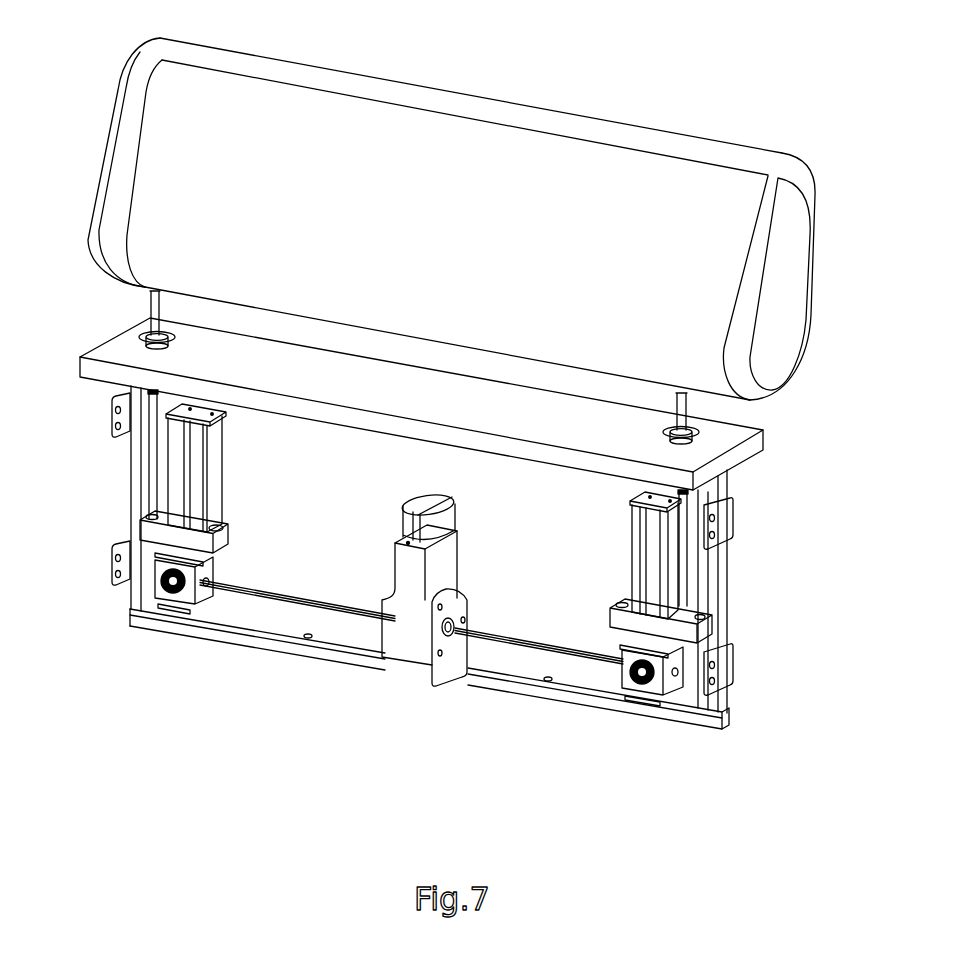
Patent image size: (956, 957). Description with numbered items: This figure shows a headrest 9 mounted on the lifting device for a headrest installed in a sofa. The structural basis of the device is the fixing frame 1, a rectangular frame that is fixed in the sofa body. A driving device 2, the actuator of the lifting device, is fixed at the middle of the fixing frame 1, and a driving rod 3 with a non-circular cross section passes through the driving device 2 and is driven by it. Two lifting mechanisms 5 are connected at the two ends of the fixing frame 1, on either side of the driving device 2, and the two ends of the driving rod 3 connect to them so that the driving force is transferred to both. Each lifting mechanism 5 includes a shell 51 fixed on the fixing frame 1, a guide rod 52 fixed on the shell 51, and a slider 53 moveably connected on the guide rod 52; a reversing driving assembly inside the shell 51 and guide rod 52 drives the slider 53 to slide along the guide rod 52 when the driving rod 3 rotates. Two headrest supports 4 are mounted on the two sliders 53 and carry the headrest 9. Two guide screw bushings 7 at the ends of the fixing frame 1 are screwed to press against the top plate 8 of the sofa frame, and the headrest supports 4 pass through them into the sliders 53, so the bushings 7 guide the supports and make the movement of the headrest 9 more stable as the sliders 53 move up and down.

The fixing frame 1 is at (310, 645).
The driving device 2 is at (400, 570).
The driving rod 3 is at (510, 637).
The headrest support 4 is at (150, 305).
The lifting mechanism 5 is at (426, 575).
The guide screw bushing 7 is at (145, 338).
The top plate 8 is at (98, 372).
The headrest 9 is at (347, 85).
The shell 51 is at (170, 612).
The guide rod 52 is at (180, 447).
The slider 53 is at (155, 533).